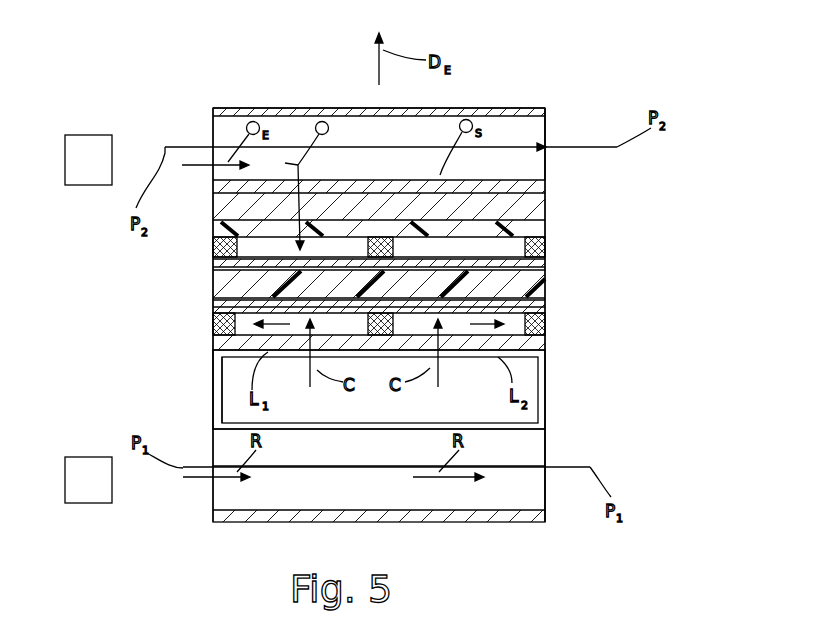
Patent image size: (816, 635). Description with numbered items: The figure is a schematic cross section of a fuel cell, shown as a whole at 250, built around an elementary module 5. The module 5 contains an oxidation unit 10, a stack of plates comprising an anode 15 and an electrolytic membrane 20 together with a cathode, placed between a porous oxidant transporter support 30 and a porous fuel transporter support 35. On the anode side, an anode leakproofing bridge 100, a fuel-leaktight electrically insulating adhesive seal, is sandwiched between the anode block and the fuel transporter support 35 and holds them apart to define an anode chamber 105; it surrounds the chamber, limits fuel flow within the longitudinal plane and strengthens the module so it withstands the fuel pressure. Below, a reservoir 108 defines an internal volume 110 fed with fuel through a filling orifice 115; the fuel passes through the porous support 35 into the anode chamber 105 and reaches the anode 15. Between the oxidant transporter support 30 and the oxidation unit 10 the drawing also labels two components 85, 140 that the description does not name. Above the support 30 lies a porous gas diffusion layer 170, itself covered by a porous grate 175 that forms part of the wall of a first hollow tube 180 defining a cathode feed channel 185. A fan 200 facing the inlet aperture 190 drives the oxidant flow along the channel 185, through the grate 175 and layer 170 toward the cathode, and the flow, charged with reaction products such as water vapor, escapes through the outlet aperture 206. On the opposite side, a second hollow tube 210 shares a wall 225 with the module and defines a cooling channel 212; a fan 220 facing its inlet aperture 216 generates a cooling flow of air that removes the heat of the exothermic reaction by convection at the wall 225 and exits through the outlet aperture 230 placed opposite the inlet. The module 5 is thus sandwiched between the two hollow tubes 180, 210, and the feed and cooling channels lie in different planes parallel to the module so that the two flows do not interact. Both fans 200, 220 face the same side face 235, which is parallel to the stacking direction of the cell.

The elementary module 5 is at (181, 80).
The oxidation unit 10 is at (547, 283).
The anode 15 is at (547, 307).
The electrolytic membrane 20 is at (547, 263).
The oxidant transporter support 30 is at (537, 228).
The fuel transporter support 35 is at (547, 342).
The spacer blocks 85 is at (213, 253).
The anode leakproofing bridge 100 is at (547, 327).
The anode chamber 105 is at (213, 327).
The reservoir 108 is at (547, 402).
The internal volume 110 is at (219, 417).
The filling orifice 115 is at (213, 400).
The spacer layer 140 is at (547, 243).
The gas diffusion layer 170 is at (533, 213).
The porous grate 175 is at (547, 188).
The first hollow tube 180 is at (530, 107).
The cathode feed channel 185 is at (278, 117).
The inlet aperture 190 is at (214, 130).
The fan 200 is at (88, 140).
The outlet 206 is at (533, 130).
The second hollow tube 210 is at (500, 497).
The cooling channel 212 is at (283, 497).
The lower side wall 216 is at (212, 503).
The fan 220 is at (90, 492).
The wall 225 is at (547, 443).
The outlet aperture 230 is at (533, 500).
The side face 235 is at (213, 290).
The assembly 250 is at (666, 311).